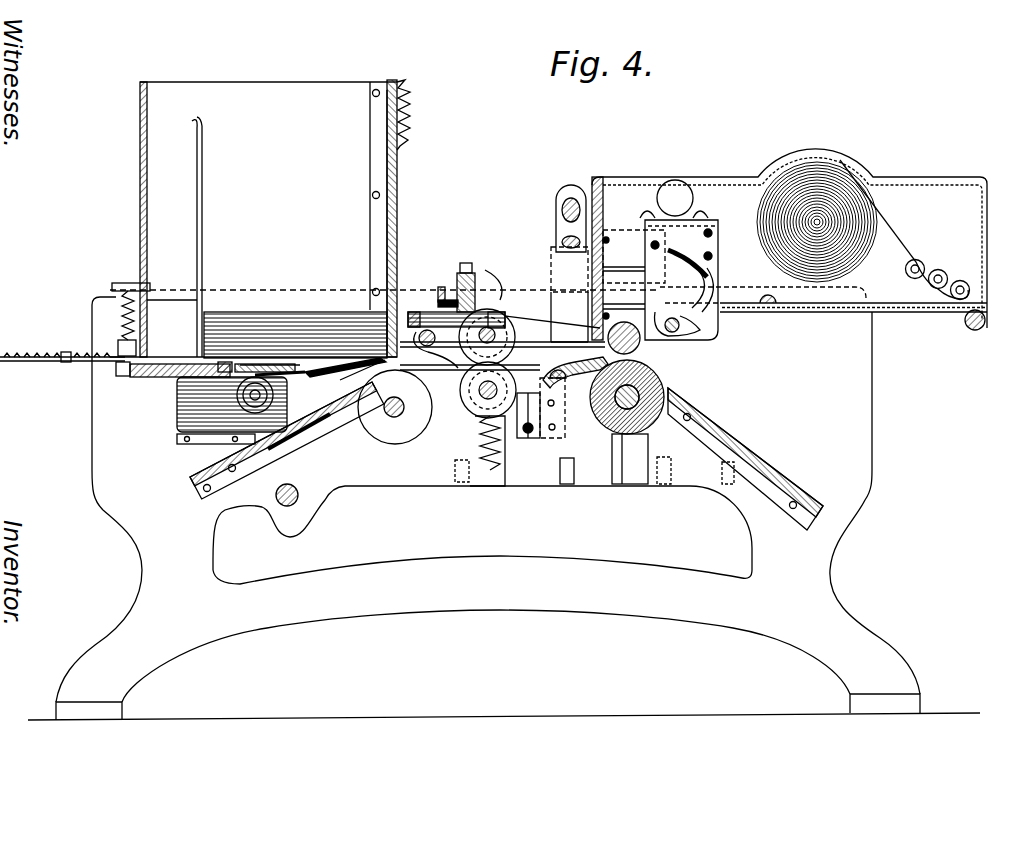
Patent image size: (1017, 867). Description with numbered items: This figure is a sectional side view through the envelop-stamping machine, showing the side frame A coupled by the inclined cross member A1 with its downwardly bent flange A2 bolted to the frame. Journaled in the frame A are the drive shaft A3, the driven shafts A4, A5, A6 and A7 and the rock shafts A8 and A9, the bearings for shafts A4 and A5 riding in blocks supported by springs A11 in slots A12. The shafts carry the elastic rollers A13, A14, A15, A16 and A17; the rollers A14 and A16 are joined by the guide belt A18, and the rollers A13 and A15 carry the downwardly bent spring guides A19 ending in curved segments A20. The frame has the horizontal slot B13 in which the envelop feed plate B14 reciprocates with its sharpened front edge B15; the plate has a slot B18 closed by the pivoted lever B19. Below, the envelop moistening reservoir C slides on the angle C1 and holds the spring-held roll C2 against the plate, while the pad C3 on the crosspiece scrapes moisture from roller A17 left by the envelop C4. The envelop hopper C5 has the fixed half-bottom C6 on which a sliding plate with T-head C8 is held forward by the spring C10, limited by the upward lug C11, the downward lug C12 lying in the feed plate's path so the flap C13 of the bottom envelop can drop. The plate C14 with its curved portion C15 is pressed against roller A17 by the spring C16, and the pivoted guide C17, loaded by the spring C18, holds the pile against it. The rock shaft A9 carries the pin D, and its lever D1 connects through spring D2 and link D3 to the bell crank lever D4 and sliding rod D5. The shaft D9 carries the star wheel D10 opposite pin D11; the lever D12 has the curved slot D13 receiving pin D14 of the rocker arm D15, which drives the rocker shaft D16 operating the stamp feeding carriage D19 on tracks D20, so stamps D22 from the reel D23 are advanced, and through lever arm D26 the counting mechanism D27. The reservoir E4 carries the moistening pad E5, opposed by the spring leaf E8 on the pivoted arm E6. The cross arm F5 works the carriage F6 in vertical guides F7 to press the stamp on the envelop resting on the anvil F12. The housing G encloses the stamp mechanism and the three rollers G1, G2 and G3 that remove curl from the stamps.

The side frame A is at (140, 570).
The inclined cross member A1 is at (200, 473).
The downwardly bent flange A2 is at (217, 500).
The rotating drive shaft A3 is at (630, 408).
The driven shaft A4 is at (625, 352).
The driven shaft A5 is at (478, 402).
The driven shaft A6 is at (496, 330).
The driven shaft A7 is at (394, 414).
The rock shaft A8 is at (299, 499).
The rock shaft A9 is at (418, 310).
The spring A11 is at (492, 458).
The slot A12 is at (510, 472).
The elastic roller A13 is at (658, 425).
The elastic roller A14 is at (640, 372).
The elastic roller A15 is at (484, 397).
The elastic roller A16 is at (465, 352).
The elastic roller A17 is at (387, 436).
The guide belt A18 is at (548, 326).
The downwardly bent spring guide A19 is at (556, 392).
The curved segment A20 is at (470, 376).
The horizontally disposed slot B13 is at (370, 372).
The envelop feed plate B14 is at (165, 378).
The upwardly inclined sharpened front edge B15 is at (286, 374).
The slot B18 is at (250, 366).
The lever B19 is at (226, 360).
The envelop moistening reservoir C is at (178, 412).
The angle C1 is at (210, 435).
The spring-held roll C2 is at (257, 405).
The pad C3 is at (365, 388).
The envelop C4 is at (348, 322).
The envelop hopper C5 is at (256, 82).
The fixed rearwardly extending half-bottom C6 is at (165, 357).
The laterally disposed T-head C8 is at (280, 364).
The spring C10 is at (48, 356).
The upwardly extending lug C11 is at (66, 352).
The downwardly extending lug C12 is at (118, 372).
The flap C13 is at (332, 368).
The plate C14 is at (387, 178).
The outwardly curved portion C15 is at (395, 407).
The spring C16 is at (410, 113).
The pivotally mounted guide C17 is at (203, 210).
The spring C18 is at (120, 298).
The pin or lever D is at (436, 349).
The lever D1 is at (518, 340).
The spring D2 is at (548, 342).
The link D3 is at (566, 422).
The bell crank lever D4 is at (540, 432).
The sliding rod D5 is at (527, 440).
The shaft D9 is at (690, 340).
The star wheel D10 is at (695, 348).
The pin D11 is at (690, 324).
The lever D12 is at (688, 278).
The curved slot D13 is at (690, 302).
The pin D14 is at (715, 270).
The rocker arm D15 is at (690, 262).
The rocker shaft D16 is at (672, 250).
The stamp feeding carriage D19 is at (700, 328).
The stamp guiding track D20 is at (757, 305).
The stamp D22 is at (875, 303).
The reel D23 is at (840, 182).
The lever arm D26 is at (655, 216).
The counting mechanism D27 is at (679, 188).
The reservoir E4 is at (432, 311).
The stamp moistening pad E5 is at (493, 285).
The arm E6 is at (442, 287).
The stamp engaging spring leaf E8 is at (472, 300).
The cross arm F5 is at (571, 200).
The carriage F6 is at (553, 242).
The vertical guide F7 is at (592, 273).
The anvil F12 is at (558, 380).
The housing G is at (905, 182).
The roller G1 is at (917, 259).
The roller G2 is at (939, 269).
The roller G3 is at (960, 280).